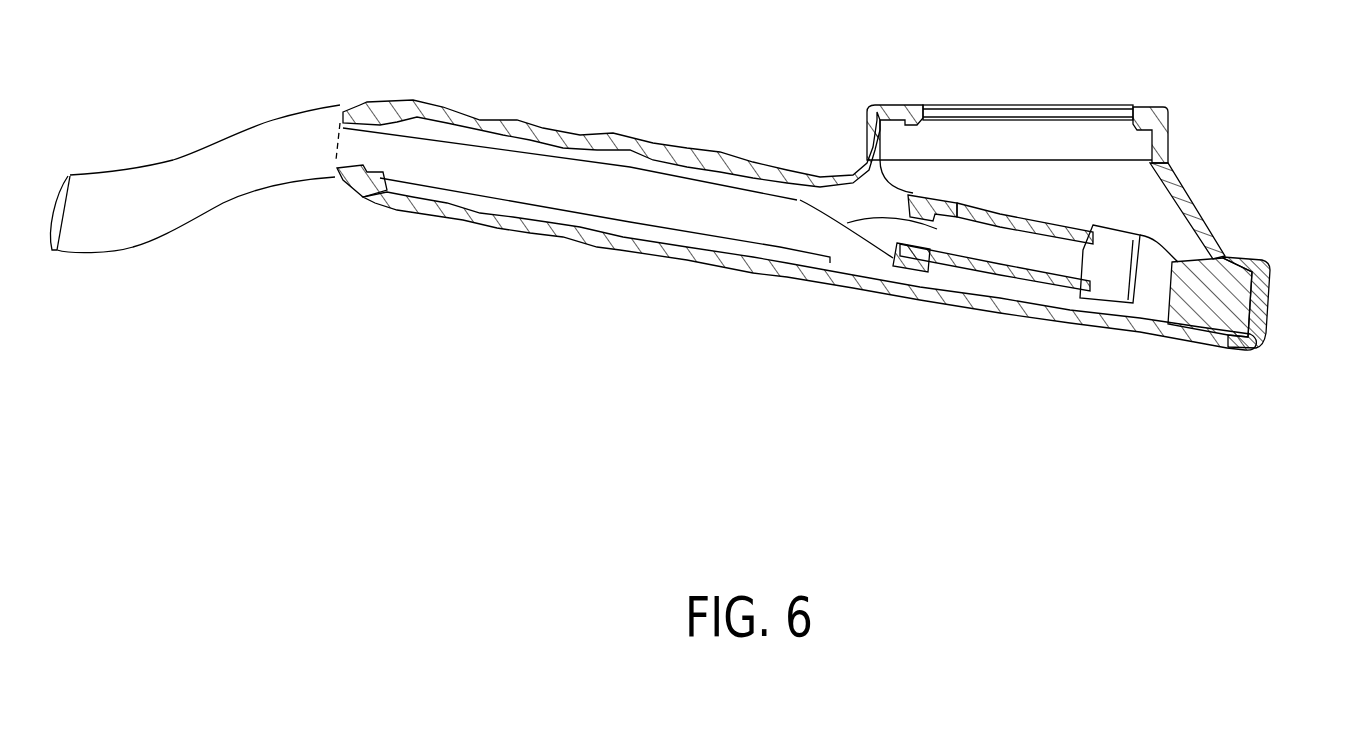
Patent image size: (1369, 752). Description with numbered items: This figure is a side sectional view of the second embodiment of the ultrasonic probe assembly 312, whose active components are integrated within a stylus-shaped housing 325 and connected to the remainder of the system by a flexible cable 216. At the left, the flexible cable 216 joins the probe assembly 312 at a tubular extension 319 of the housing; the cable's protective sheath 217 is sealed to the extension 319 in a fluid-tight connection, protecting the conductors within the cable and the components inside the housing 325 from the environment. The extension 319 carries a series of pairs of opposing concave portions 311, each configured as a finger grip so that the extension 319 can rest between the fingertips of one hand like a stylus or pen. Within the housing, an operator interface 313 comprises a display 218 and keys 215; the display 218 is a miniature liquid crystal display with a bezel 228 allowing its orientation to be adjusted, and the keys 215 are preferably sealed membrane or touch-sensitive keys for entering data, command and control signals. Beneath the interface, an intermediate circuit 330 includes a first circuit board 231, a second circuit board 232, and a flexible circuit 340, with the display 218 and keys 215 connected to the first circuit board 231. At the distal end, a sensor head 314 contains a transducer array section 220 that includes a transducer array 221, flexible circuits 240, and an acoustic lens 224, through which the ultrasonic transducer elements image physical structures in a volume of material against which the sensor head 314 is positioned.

The protective sheath 217 is at (160, 168).
The opposing concave portions 311 is at (796, 193).
The tubular extension 319 is at (757, 163).
The flexible cable 216 is at (827, 260).
The keys 215 is at (898, 90).
The display 218 is at (1027, 102).
The bezel 228 is at (1148, 103).
The operator interface 313 is at (1006, 157).
The intermediate circuit 330 is at (991, 201).
The flexible circuit 340 is at (928, 193).
The second circuit board 232 is at (980, 280).
The first circuit board 231 is at (1062, 218).
The stylus-shaped housing 325 is at (1177, 183).
The flexible circuits 240 is at (1156, 254).
The transducer array section 220 is at (1180, 247).
The sensor head 314 is at (1237, 252).
The acoustic lens 224 is at (1278, 311).
The transducer array 221 is at (1188, 335).
The ultrasonic probe assembly 312 is at (390, 358).